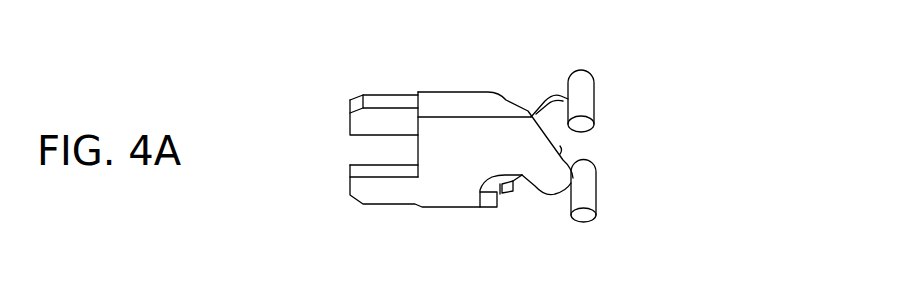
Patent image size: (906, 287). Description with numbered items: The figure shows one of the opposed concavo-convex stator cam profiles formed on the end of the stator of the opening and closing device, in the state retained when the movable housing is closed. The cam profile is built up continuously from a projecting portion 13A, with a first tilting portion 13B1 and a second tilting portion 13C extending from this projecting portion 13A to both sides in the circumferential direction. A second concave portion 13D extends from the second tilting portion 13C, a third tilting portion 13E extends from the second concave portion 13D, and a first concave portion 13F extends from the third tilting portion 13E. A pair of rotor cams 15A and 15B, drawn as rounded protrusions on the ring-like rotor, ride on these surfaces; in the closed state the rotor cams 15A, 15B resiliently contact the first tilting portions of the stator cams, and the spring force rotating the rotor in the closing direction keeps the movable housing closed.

The projecting portion 13A is at (546, 121).
The first tilting portion 13B1 is at (596, 185).
The second tilting portion 13C is at (565, 150).
The second concave portion 13D is at (502, 93).
The third tilting portion 13E is at (488, 196).
The first concave portion 13F is at (490, 178).
The rotor cam 15A is at (584, 214).
The rotor cam 15B is at (586, 72).